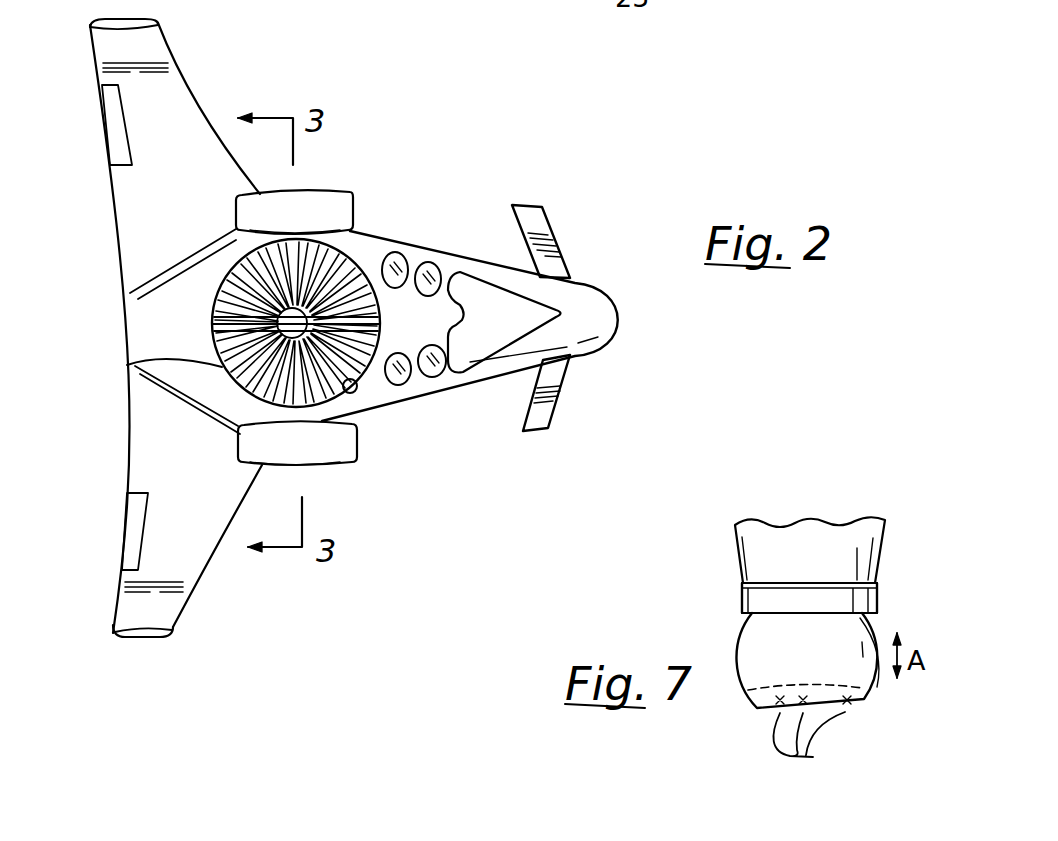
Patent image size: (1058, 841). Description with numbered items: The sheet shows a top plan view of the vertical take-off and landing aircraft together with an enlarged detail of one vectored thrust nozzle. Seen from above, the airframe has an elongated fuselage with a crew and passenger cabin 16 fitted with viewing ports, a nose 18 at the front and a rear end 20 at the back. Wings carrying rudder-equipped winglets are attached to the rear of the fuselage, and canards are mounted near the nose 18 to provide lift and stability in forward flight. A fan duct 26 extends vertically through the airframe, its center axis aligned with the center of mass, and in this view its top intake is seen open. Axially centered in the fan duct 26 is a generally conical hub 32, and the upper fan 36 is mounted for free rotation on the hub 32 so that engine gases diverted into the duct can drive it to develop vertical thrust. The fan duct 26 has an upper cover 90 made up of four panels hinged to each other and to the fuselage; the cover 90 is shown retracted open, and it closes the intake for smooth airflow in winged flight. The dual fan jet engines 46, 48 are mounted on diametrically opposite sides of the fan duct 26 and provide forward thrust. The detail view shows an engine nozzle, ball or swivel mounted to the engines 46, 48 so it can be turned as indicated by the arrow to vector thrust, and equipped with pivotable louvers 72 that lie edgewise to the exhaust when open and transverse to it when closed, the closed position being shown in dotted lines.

In FIG. 2, the crew and passenger cabin 16 is at (493, 347).
In FIG. 2, the nose 18 is at (620, 312).
In FIG. 2, the rear end 20 is at (127, 327).
In FIG. 2, the fan duct 26 is at (358, 390).
In FIG. 2, the hub 32 is at (310, 307).
In FIG. 2, the upper fan 36 is at (356, 260).
In FIG. 2, the fan jet engine 46 is at (345, 195).
In FIG. 7, the fan jet engine 46 is at (845, 542).
In FIG. 2, the fan jet engine 48 is at (337, 453).
In FIG. 7, the fan jet engine 48 is at (809, 598).
In FIG. 7, the louvers 72 is at (813, 755).
In FIG. 2, the upper cover 90 is at (127, 365).